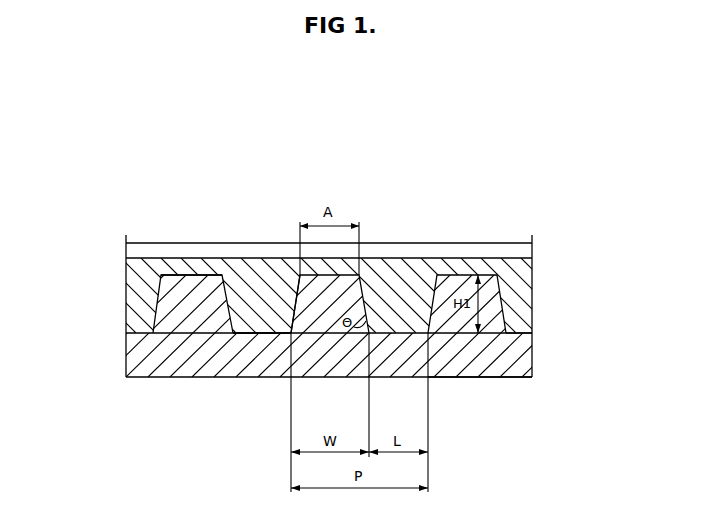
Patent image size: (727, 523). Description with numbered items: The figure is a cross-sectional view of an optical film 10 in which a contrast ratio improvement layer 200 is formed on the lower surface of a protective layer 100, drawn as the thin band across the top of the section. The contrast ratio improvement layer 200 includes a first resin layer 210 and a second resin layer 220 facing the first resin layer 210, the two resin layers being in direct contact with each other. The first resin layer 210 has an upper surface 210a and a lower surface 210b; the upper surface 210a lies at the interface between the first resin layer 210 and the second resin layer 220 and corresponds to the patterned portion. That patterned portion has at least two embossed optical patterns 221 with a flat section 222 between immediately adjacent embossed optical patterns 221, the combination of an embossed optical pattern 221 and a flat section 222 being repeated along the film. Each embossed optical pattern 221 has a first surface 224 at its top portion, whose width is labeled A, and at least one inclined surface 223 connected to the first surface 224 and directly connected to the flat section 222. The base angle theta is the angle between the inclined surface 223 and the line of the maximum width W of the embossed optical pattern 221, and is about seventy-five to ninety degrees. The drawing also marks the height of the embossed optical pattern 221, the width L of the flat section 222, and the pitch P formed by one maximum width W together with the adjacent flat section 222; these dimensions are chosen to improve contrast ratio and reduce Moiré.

The optical film 10 is at (527, 171).
The protective layer 100 is at (533, 251).
The contrast ratio improvement layer 200 is at (321, 317).
The first resin layer 210 is at (128, 352).
The upper surface of first resin layer 210a is at (517, 334).
The lower surface of first resin layer 210b is at (514, 378).
The second resin layer 220 is at (126, 300).
The embossed optical pattern 221 is at (307, 285).
The flat section 222 is at (256, 335).
The inclined surface 223 is at (203, 334).
The first surface 224 is at (195, 272).